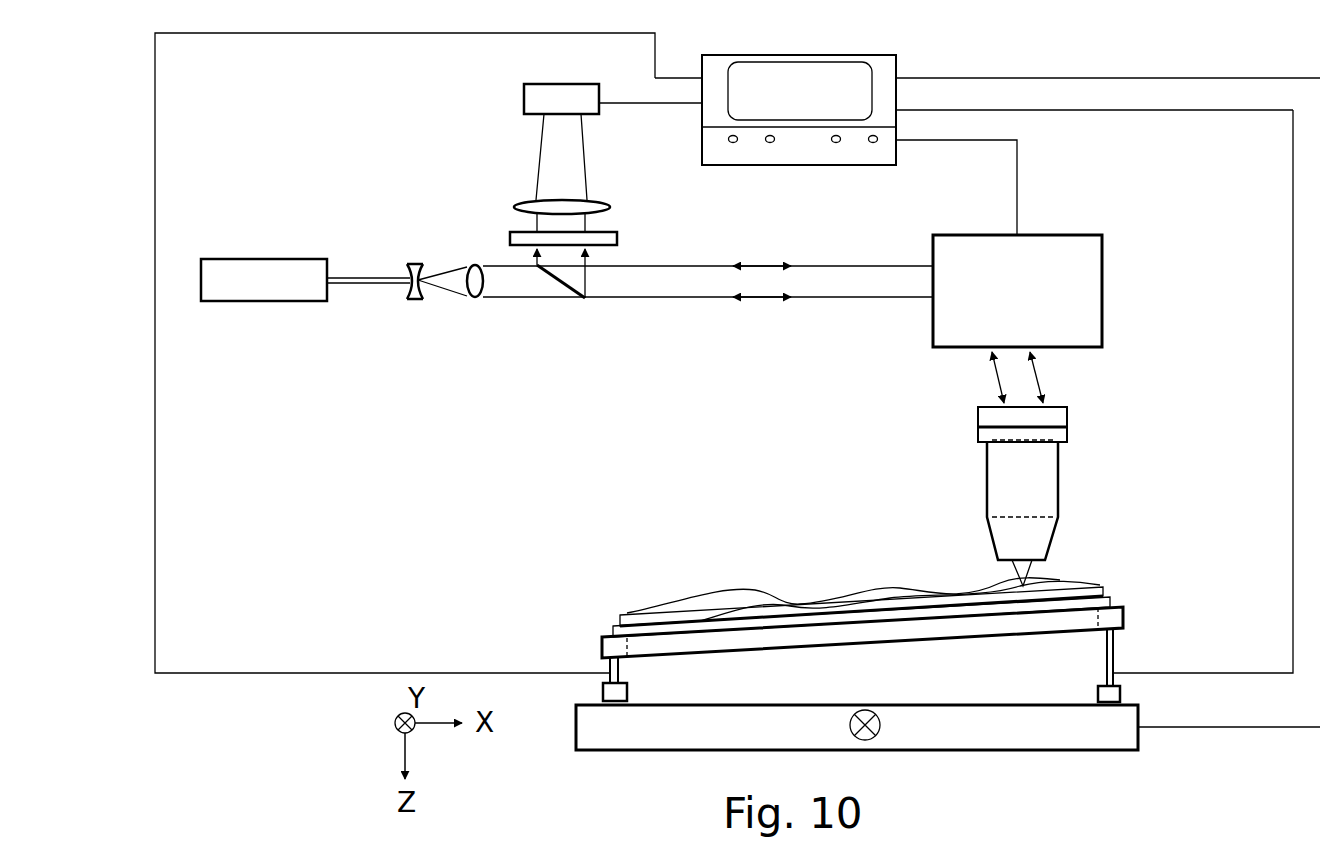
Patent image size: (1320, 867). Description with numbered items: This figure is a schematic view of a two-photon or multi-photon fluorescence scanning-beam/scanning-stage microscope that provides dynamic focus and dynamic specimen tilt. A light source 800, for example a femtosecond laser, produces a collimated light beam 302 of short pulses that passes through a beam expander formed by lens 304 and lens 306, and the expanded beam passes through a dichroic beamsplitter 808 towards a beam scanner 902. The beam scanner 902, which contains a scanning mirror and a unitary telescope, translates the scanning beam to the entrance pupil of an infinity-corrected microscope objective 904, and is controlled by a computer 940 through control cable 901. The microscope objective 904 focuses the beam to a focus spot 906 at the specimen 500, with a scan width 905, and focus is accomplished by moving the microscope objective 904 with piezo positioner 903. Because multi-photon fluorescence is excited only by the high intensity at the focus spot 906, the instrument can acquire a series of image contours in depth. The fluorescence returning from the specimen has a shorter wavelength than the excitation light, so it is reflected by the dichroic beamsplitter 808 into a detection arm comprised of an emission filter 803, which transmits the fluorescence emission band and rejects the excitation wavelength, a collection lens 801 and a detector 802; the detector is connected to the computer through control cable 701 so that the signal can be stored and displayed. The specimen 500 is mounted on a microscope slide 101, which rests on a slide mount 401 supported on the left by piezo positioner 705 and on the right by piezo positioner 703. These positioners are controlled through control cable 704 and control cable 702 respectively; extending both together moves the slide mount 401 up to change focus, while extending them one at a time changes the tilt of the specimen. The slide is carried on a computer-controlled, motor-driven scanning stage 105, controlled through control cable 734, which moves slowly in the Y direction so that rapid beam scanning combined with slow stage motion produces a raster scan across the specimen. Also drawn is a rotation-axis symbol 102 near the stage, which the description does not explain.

The microscope slide 101 is at (1110, 600).
The rotation axis indicator 102 is at (865, 740).
The scanning stage 105 is at (1098, 750).
The collimated light beam 302 is at (361, 277).
The lens 304 is at (407, 298).
The lens 306 is at (468, 297).
The slide mount 401 is at (1123, 613).
The specimen 500 is at (1090, 587).
The control cable 701 is at (613, 105).
The control cable 702 is at (1132, 110).
The piezo positioner 703 is at (1122, 693).
The control cable 704 is at (155, 585).
The piezo positioner 705 is at (602, 693).
The control cable 734 is at (993, 78).
The light source 800 is at (240, 259).
The collection lens 801 is at (513, 207).
The detector 802 is at (524, 100).
The emission filter 803 is at (510, 237).
The dichroic beamsplitter 808 is at (580, 299).
The control cable 901 is at (1017, 163).
The beam scanner 902 is at (1102, 292).
The piezo positioner 903 is at (1067, 422).
The microscope objective 904 is at (1058, 498).
The scan width 905 is at (1043, 583).
The focus spot 906 is at (1020, 584).
The computer 940 is at (742, 165).